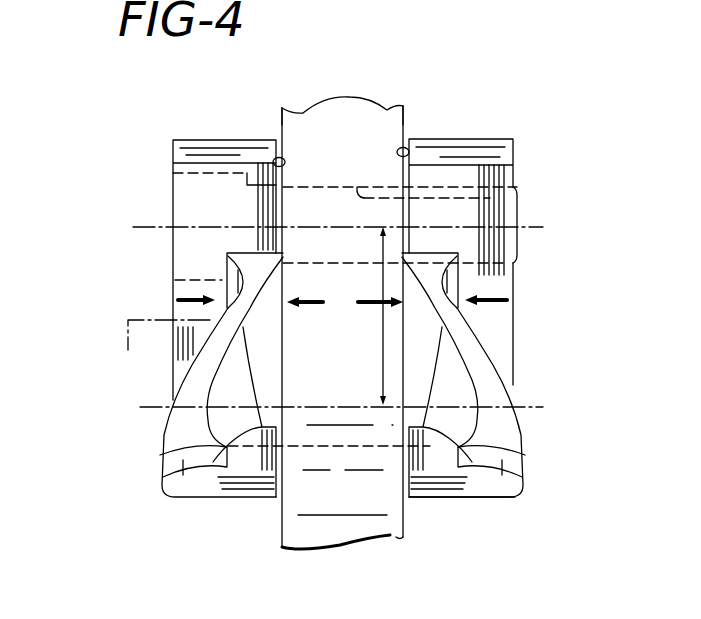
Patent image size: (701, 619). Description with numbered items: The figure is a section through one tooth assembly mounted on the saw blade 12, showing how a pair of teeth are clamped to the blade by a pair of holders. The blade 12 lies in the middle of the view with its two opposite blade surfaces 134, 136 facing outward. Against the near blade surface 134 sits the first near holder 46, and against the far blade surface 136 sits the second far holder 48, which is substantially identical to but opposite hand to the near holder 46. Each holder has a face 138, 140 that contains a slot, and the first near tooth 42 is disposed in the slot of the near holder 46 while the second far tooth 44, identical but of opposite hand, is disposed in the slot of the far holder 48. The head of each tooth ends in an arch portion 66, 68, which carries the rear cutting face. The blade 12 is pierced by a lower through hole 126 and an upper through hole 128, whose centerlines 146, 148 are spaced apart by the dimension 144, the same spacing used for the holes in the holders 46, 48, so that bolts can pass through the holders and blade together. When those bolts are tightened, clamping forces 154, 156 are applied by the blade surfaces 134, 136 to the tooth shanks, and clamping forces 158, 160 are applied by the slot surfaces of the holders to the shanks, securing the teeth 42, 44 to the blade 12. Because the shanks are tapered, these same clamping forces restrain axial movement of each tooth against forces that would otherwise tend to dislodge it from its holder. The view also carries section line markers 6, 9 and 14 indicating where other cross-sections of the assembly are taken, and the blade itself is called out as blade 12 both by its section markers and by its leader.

The section line 6- 6 is at (392, 277).
The section line 9- 9 is at (227, 240).
The blade 12 is at (350, 128).
The section line 14- 14 is at (415, 79).
The first near tooth 42 is at (184, 405).
The second far tooth 44 is at (509, 423).
The first near holder 46 is at (184, 156).
The second far holder 48 is at (496, 161).
The arch portion 66 is at (188, 432).
The arch portion 68 is at (503, 440).
The lower through hole 126 is at (350, 442).
The upper through hole 128 is at (512, 198).
The blade surface 134 is at (280, 108).
The blade surface 136 is at (405, 117).
The face 138 is at (275, 158).
The face 140 is at (409, 148).
The dimension 144 is at (380, 253).
The centerline 146 is at (342, 402).
The centerline 148 is at (240, 227).
The clamping force 154 is at (310, 307).
The clamping force 156 is at (365, 307).
The clamping force 158 is at (175, 293).
The clamping force 160 is at (492, 293).